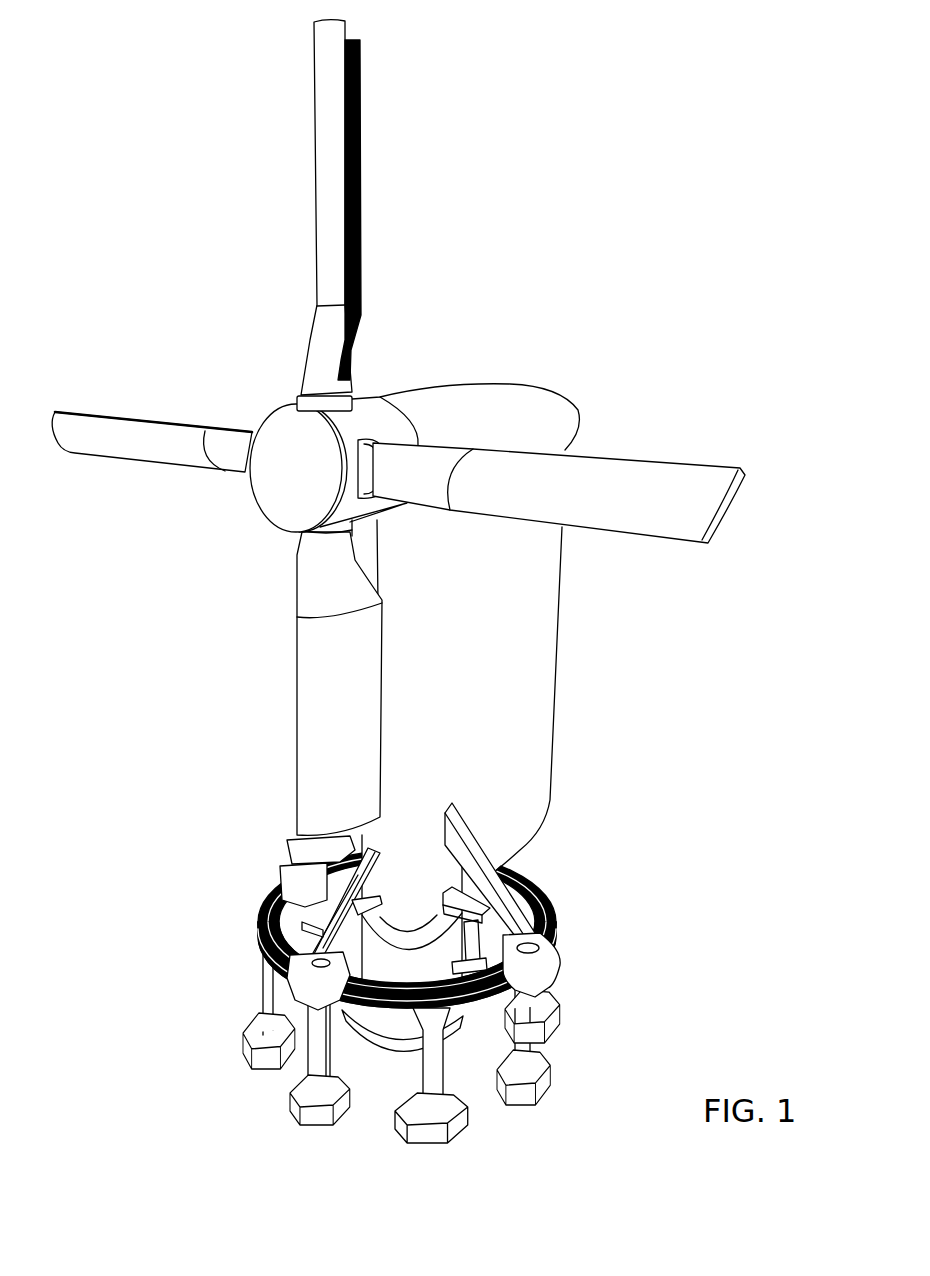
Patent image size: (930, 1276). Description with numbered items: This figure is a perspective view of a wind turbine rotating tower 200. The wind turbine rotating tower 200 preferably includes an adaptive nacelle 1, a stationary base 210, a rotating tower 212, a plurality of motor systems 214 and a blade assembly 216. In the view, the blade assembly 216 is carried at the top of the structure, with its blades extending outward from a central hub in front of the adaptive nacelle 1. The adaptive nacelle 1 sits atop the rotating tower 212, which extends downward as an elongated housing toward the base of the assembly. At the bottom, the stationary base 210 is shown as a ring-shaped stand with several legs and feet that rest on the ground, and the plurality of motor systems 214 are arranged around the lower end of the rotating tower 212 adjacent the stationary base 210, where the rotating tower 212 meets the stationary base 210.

The adaptive nacelle 1 is at (582, 332).
The wind turbine rotating tower 200 is at (525, 186).
The blade assembly 216 is at (222, 188).
The rotating tower 212 is at (585, 672).
The motor systems 214 is at (578, 947).
The stationary base 210 is at (234, 1006).